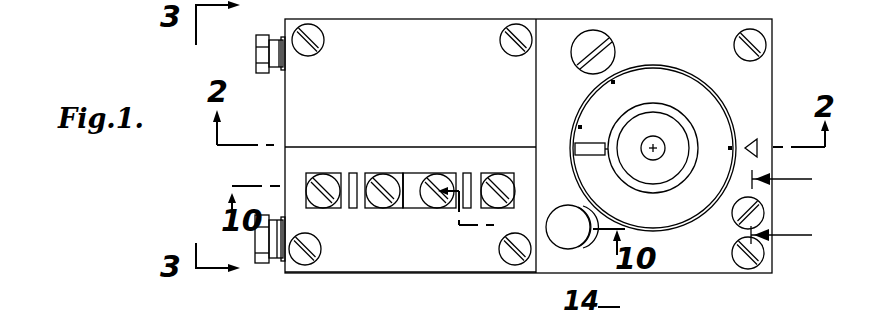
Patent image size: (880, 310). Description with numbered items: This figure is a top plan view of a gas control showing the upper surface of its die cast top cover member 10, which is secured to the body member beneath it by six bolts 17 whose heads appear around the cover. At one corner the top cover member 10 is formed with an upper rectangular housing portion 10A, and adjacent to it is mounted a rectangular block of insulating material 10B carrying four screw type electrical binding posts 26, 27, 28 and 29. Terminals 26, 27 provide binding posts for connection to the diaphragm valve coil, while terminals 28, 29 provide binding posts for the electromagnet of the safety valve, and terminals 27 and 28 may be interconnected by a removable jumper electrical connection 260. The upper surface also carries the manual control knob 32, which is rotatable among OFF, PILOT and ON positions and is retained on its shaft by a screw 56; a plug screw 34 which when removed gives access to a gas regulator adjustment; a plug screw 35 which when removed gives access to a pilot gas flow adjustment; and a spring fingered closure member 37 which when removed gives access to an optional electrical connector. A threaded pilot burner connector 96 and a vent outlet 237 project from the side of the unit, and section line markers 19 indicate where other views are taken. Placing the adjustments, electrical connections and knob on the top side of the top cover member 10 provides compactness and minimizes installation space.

The top cover member 10 is at (650, 30).
The upper rectangular housing portion 10A is at (417, 30).
The rectangular block of insulating material 10B is at (392, 255).
The bolts 17 is at (308, 33).
The section line 19 is at (804, 216).
The screw type electrical binding post 26 is at (325, 175).
The screw type electrical binding post 27 is at (388, 175).
The screw type electrical binding post 28 is at (438, 175).
The screw type electrical binding post 29 is at (498, 175).
The manual control knob 32 is at (675, 85).
The plug screw 34 is at (588, 40).
The plug screw 35 is at (760, 213).
The spring fingered closure member 37 is at (568, 212).
The screw 56 is at (653, 148).
The threaded pilot burner connector 96 is at (259, 264).
The vent outlet 237 is at (262, 35).
The removable jumper electrical connection 260 is at (412, 183).